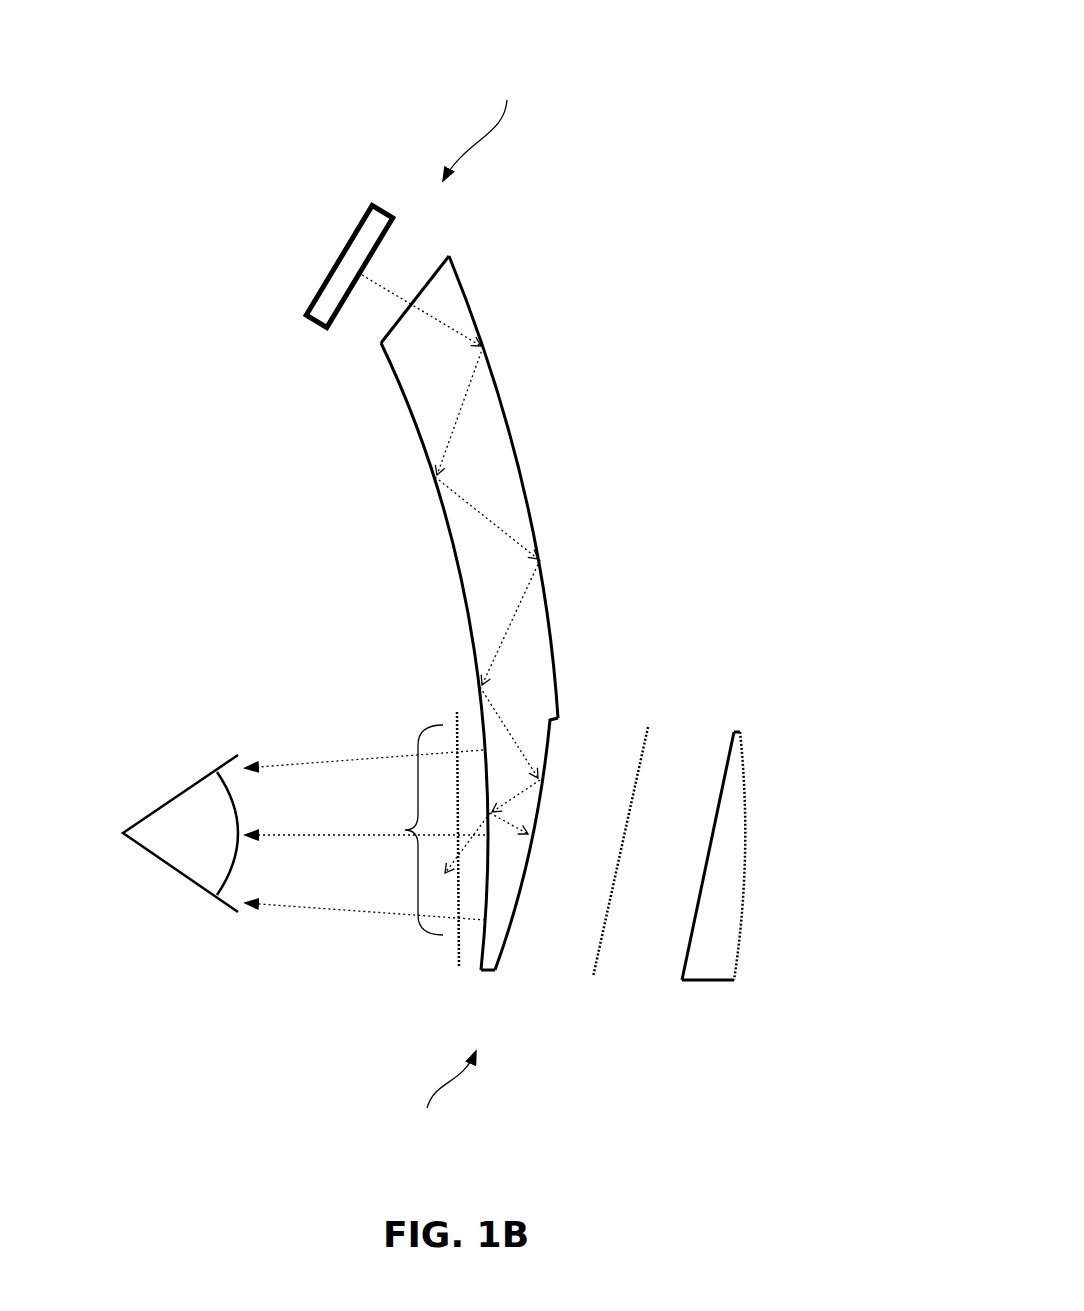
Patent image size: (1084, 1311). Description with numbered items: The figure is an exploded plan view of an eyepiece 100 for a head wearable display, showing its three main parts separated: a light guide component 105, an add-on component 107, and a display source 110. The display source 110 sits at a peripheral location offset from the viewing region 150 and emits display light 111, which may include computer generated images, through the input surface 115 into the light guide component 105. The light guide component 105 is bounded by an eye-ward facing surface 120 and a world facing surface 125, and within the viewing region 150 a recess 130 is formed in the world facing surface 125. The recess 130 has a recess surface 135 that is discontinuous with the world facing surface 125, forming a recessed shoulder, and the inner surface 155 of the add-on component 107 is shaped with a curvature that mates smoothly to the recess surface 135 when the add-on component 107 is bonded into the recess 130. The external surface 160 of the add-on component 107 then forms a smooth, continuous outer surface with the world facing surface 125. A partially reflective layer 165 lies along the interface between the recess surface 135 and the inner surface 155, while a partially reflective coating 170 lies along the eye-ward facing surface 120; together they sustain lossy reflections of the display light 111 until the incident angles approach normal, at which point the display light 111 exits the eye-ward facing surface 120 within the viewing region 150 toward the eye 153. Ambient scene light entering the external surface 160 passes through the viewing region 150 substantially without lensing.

The eyepiece 100 is at (731, 77).
The light guide component 105 is at (482, 448).
The add-on component 107 is at (707, 960).
The display source 110 is at (365, 212).
The display light 111 is at (377, 282).
The input surface 115 is at (399, 322).
The eye-ward facing surface 120 is at (407, 526).
The world facing surface 125 is at (570, 509).
The recess 130 is at (553, 799).
The recess surface 135 is at (513, 923).
The viewing region 150 is at (403, 829).
The eye 153 is at (180, 833).
The inner surface 155 is at (728, 775).
The external surface 160 is at (746, 843).
The partially reflective layer 165 is at (598, 972).
The partially reflective coating 170 is at (455, 955).